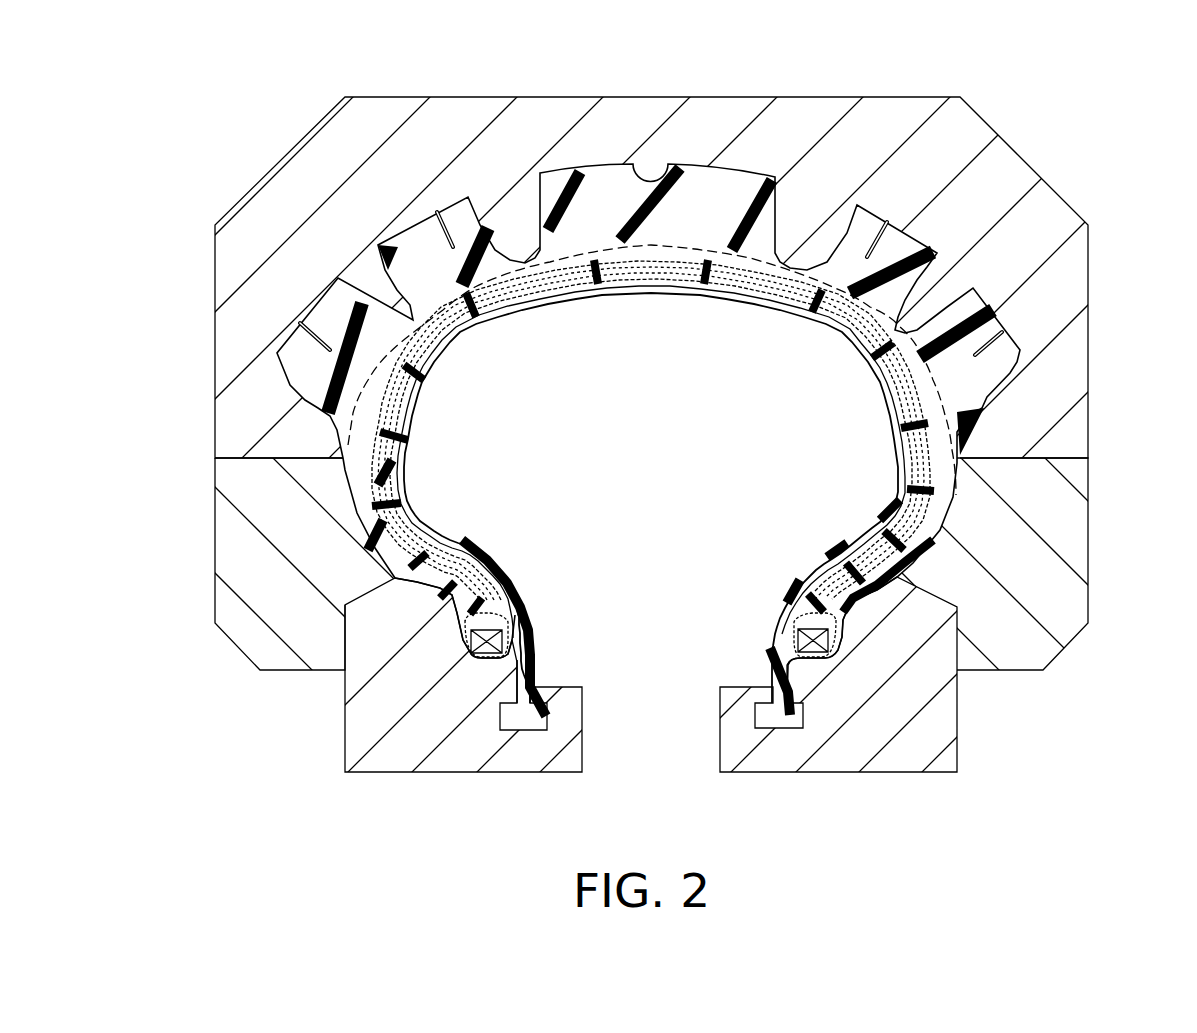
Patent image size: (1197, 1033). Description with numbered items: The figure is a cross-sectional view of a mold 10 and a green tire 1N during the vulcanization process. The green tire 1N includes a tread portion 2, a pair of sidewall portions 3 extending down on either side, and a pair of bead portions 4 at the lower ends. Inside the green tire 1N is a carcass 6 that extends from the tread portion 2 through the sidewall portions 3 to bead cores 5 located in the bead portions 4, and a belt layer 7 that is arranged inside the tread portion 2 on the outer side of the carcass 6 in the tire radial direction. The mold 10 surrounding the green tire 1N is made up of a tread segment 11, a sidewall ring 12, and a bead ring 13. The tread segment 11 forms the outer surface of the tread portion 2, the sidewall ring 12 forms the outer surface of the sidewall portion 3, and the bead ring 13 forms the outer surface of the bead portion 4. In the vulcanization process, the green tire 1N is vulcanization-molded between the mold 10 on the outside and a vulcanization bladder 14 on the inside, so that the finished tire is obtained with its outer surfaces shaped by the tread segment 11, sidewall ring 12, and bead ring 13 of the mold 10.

The mold 10 is at (598, 516).
The tread segment 11 is at (1058, 289).
The sidewall ring 12 is at (288, 530).
The bead ring 13 is at (424, 722).
The vulcanization bladder 14 is at (527, 637).
The green tire 1N is at (652, 360).
The tread portion 2 is at (605, 198).
The sidewall portion 3 is at (943, 475).
The bead portion 4 is at (651, 630).
The bead core 5 is at (797, 637).
The carcass 6 is at (372, 452).
The belt layer 7 is at (397, 356).